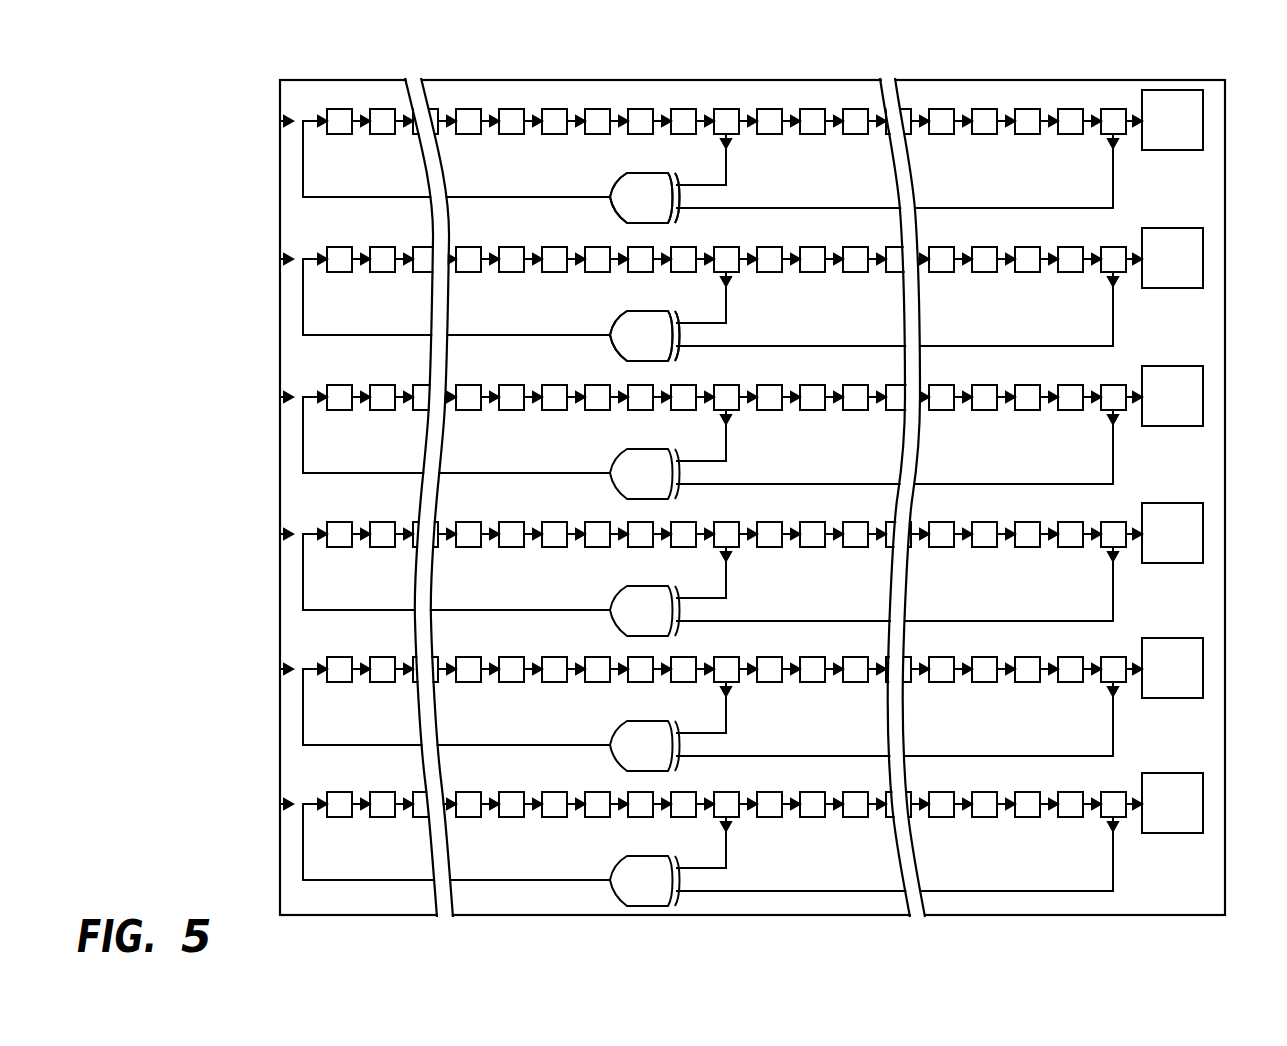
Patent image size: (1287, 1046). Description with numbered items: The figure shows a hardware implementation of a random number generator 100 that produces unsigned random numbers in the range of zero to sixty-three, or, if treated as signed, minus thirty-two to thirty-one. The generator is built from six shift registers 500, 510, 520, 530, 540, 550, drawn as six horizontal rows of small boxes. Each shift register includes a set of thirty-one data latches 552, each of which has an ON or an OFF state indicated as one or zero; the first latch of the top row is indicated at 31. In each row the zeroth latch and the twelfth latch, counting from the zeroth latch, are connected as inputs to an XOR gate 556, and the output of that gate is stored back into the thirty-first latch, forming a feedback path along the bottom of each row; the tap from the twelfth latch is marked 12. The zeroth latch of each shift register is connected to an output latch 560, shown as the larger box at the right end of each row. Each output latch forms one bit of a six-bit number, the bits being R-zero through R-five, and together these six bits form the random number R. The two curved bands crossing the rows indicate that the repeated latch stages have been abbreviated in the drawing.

The scrambler/descrambler system 100 is at (180, 152).
The shift register stage 31 is at (338, 109).
The shift register 500 is at (283, 121).
The shift register 510 is at (283, 259).
The shift register 520 is at (283, 397).
The shift register 530 is at (283, 534).
The shift register 540 is at (283, 669).
The shift register 550 is at (283, 804).
The data latches 552 is at (467, 134).
The XOR gate 556 is at (645, 172).
The tap output 12 is at (735, 140).
The output latch 560 is at (1183, 150).